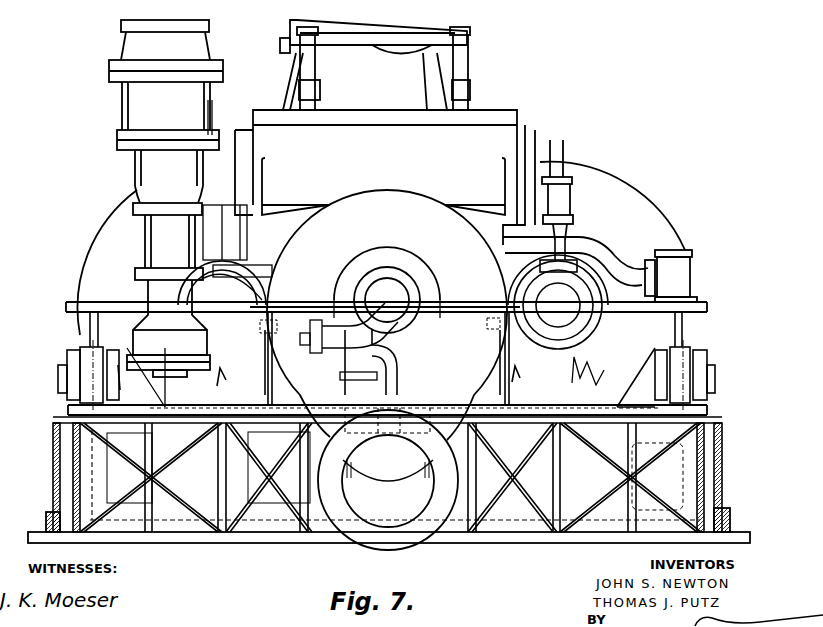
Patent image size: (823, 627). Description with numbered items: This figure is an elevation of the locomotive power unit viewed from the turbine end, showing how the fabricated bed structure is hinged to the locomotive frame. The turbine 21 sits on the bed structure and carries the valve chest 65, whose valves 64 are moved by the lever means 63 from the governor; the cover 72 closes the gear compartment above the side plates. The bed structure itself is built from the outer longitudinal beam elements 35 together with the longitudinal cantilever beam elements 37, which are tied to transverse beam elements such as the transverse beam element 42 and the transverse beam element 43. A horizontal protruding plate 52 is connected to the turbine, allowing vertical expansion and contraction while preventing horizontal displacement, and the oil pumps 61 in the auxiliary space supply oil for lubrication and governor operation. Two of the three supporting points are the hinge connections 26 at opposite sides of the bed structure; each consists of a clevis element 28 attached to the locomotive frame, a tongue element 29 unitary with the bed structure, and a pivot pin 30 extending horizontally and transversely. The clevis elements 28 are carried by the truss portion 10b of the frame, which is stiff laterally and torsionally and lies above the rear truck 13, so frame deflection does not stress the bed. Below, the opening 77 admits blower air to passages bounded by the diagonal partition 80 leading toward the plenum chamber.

The truss portion 10b is at (705, 414).
The rear truck 13 is at (58, 417).
The turbine 21 is at (343, 196).
The hinge connection 26 is at (66, 361).
The clevis element 28 is at (113, 386).
The tongue element 29 is at (90, 352).
The pivot pin 30 is at (59, 377).
The outer longitudinal beam element 35 is at (97, 323).
The longitudinal cantilever beam element 37 is at (265, 374).
The transverse beam element 42 is at (571, 376).
The transverse beam element 43 is at (590, 392).
The horizontal protruding plate 52 is at (413, 427).
The oil pump 61 is at (569, 320).
The lever means 63 is at (330, 25).
The valve 64 is at (318, 90).
The valve chest 65 is at (428, 167).
The cover 72 is at (607, 178).
The opening 77 is at (197, 506).
The diagonal partition 80 is at (250, 473).